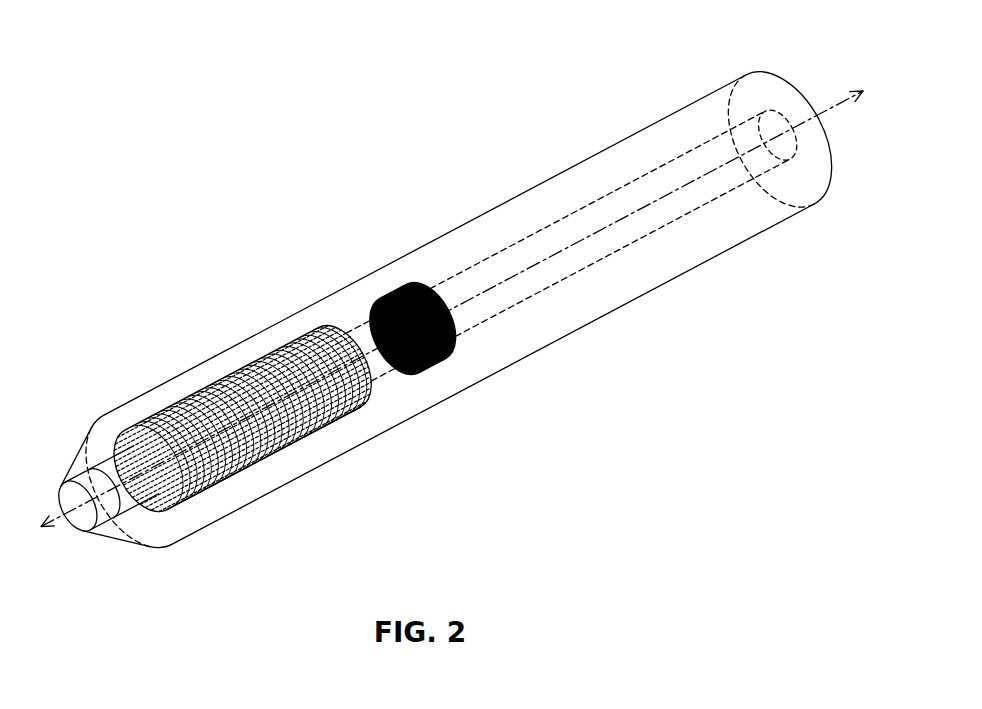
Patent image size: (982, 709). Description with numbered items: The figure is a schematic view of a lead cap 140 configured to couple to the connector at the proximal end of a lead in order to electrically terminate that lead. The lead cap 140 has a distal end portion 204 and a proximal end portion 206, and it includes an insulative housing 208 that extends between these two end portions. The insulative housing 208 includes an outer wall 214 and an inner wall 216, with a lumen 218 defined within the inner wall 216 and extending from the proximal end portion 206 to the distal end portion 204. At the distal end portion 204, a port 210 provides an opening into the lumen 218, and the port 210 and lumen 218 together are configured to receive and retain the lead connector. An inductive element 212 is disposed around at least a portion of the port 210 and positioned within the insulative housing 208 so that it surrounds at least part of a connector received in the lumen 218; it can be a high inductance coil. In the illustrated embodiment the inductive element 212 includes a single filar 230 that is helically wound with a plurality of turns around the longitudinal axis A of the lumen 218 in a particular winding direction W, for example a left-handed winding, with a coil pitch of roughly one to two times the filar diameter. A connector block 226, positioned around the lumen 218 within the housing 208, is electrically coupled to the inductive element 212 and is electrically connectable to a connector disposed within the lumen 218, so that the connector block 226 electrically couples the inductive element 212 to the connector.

The lead cap 140 is at (356, 165).
The distal end portion 204 is at (459, 309).
The proximal end portion 206 is at (97, 499).
The insulative housing 208 is at (242, 418).
The port 210 is at (778, 135).
The inductive element 212 is at (264, 458).
The outer wall 214 is at (424, 245).
The inner wall 216 is at (568, 246).
The lumen 218 is at (780, 139).
The connector block 226 is at (413, 329).
The single filar 230 is at (161, 545).
The winding direction W is at (105, 491).
The longitudinal axis A is at (452, 308).